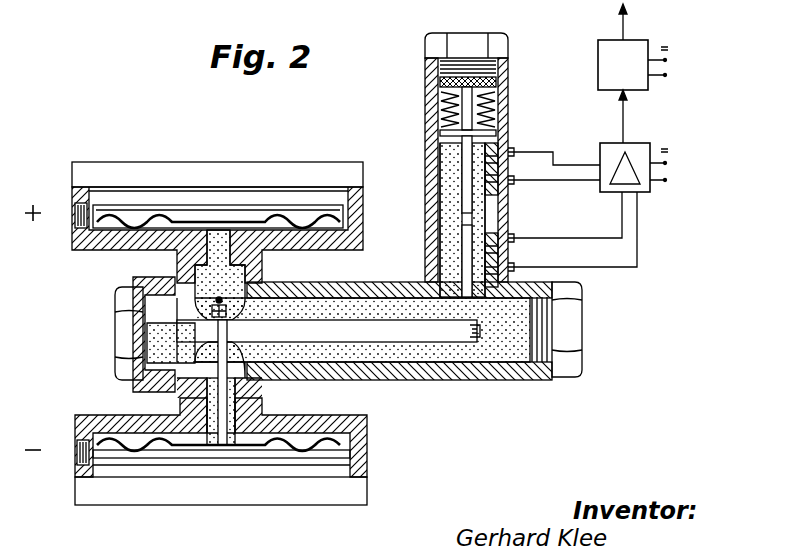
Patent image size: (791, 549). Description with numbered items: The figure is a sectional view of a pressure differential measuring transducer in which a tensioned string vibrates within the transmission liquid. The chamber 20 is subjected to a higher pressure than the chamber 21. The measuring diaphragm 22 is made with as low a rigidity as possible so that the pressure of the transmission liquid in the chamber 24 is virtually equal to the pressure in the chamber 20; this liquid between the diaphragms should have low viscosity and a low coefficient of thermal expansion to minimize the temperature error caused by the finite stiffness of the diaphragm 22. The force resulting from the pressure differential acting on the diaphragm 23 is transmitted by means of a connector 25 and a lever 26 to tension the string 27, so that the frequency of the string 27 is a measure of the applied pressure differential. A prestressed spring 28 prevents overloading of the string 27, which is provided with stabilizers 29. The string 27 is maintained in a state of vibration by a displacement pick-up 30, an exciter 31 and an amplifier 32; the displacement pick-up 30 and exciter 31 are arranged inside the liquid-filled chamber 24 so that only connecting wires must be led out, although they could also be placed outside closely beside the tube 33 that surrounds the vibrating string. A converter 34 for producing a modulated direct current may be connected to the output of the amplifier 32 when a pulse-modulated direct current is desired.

The chamber 20 is at (108, 206).
The chamber 21 is at (255, 460).
The measuring diaphragm 22 is at (155, 209).
The diaphragm 23 is at (323, 452).
The chamber 24 is at (208, 284).
The connector 25 is at (217, 372).
The lever 26 is at (380, 330).
The string 27 is at (473, 215).
The prestressed spring 28 is at (440, 106).
The stabilizers 29 is at (462, 237).
The displacement pick-up 30 is at (497, 258).
The exciter 31 is at (496, 141).
The amplifier 32 is at (632, 182).
The tube 33 is at (502, 79).
The converter 34 is at (608, 52).